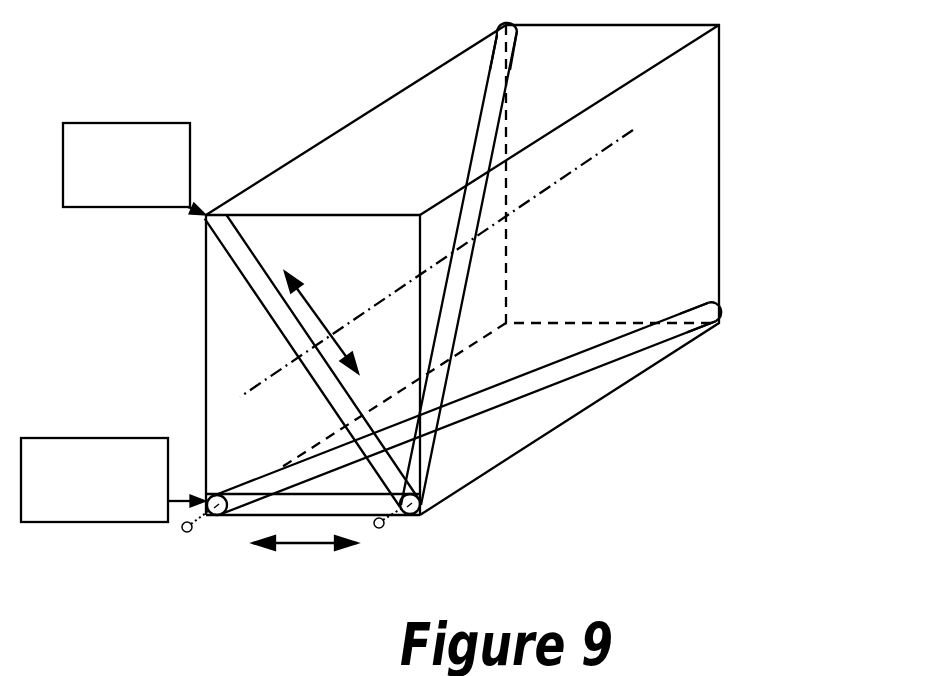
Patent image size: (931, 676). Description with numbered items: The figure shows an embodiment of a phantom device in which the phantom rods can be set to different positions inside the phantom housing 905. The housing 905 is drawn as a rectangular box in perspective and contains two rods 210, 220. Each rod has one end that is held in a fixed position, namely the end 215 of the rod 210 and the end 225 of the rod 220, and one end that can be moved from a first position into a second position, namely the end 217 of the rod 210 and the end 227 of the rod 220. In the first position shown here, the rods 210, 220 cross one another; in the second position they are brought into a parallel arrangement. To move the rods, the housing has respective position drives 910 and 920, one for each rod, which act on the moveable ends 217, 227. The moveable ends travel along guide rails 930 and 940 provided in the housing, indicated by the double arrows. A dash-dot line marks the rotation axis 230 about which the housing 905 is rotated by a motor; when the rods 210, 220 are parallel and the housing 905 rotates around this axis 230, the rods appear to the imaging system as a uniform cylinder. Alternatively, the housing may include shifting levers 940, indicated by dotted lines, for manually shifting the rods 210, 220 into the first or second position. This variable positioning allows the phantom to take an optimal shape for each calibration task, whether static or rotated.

The phantom housing 905 is at (719, 167).
The position drive 910 is at (85, 207).
The position drive 920 is at (42, 437).
The guide rail 930 is at (345, 506).
The guide rail / shifting lever 940 is at (238, 260).
The rod 210 is at (563, 370).
The end of rod 215 is at (709, 313).
The end of rod 217 is at (206, 496).
The rod 220 is at (468, 275).
The end of rod 225 is at (510, 36).
The end of rod 227 is at (421, 504).
The rotation axis 230 is at (558, 184).